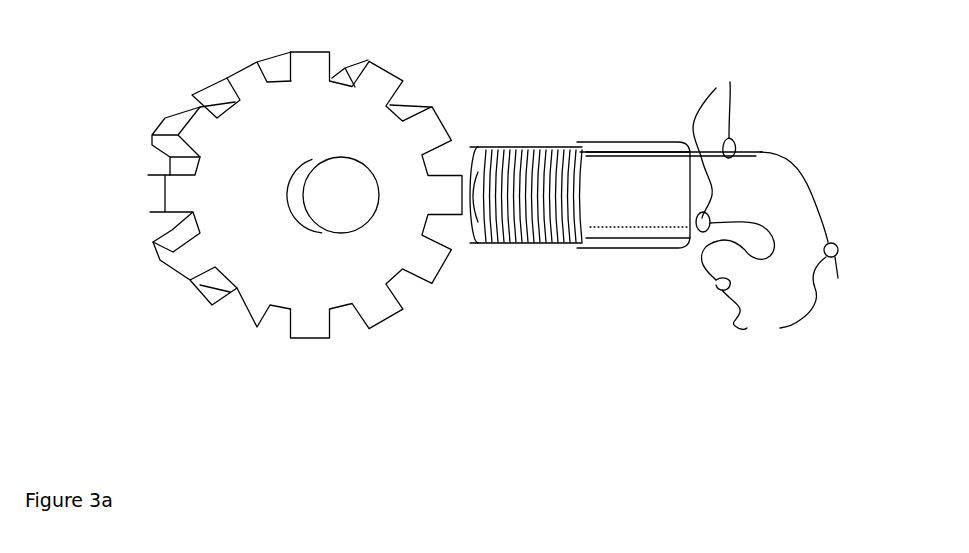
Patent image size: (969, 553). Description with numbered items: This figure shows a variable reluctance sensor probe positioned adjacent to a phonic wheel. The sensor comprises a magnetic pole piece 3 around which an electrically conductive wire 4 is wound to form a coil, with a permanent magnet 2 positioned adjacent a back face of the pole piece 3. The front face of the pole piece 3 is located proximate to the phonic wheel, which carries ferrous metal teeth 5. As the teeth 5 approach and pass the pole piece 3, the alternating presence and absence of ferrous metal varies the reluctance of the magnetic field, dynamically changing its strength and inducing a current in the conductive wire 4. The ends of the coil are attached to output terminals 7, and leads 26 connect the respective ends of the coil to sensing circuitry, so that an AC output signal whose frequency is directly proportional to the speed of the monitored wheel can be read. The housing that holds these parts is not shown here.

The permanent magnet 2 is at (596, 250).
The pole piece 3 is at (464, 158).
The conductive wire 4 is at (526, 136).
The ferrous metal teeth 5 is at (271, 328).
The output terminals 7 is at (671, 132).
The leads 26 is at (770, 258).